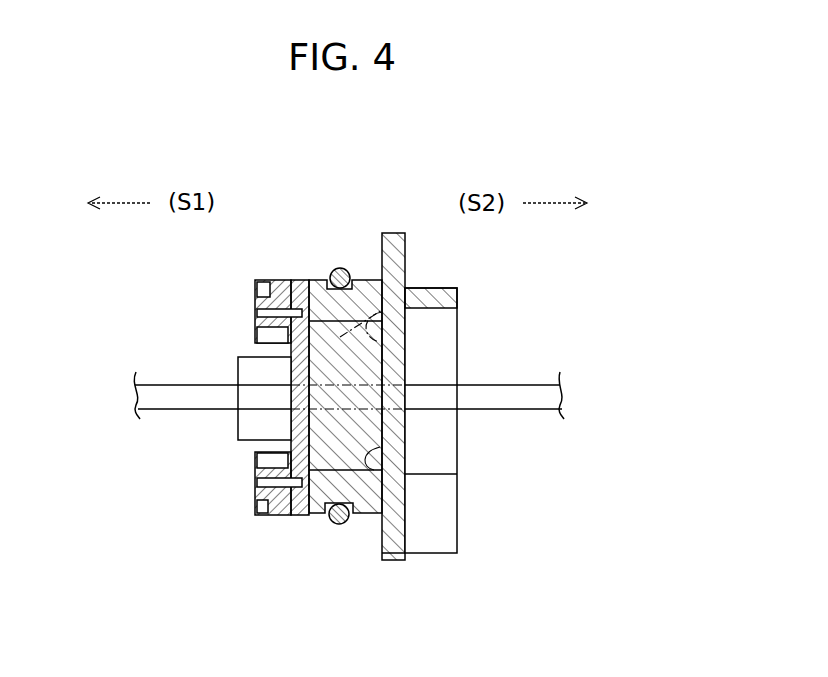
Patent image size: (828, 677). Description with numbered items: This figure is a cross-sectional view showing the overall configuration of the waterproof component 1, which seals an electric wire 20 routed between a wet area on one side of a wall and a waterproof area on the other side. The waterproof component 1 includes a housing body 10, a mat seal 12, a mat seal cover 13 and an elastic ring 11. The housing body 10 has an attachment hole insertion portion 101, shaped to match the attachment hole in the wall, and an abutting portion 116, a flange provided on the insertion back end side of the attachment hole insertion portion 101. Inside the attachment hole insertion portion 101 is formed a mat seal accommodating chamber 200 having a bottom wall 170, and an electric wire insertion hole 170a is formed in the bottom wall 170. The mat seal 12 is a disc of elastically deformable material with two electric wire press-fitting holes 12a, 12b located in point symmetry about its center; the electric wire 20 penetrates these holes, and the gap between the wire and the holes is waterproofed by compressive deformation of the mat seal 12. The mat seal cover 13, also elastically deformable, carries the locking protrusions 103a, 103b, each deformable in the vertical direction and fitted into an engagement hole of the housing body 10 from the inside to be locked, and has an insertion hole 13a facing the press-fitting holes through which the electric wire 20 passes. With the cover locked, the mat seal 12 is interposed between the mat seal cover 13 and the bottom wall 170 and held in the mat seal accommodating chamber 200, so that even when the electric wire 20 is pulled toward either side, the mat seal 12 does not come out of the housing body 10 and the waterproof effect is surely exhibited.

The waterproof component 1 is at (332, 201).
The housing body 10 is at (400, 511).
The attachment hole insertion portion 101 is at (371, 281).
The locking protrusion 103a is at (274, 294).
The locking protrusion 103b is at (272, 517).
The elastic ring 11 is at (341, 267).
The abutting portion 116 is at (381, 553).
The mat seal 12 is at (347, 352).
The electric wire press-fitting hole 12a is at (330, 325).
The electric wire press-fitting hole 12b is at (319, 451).
The mat seal cover 13 is at (290, 357).
The insertion hole 13a is at (290, 402).
The bottom wall 170 is at (408, 308).
The electric wire insertion hole 170a is at (408, 399).
The electric wire 20 is at (158, 410).
The mat seal accommodating chamber 200 is at (378, 506).